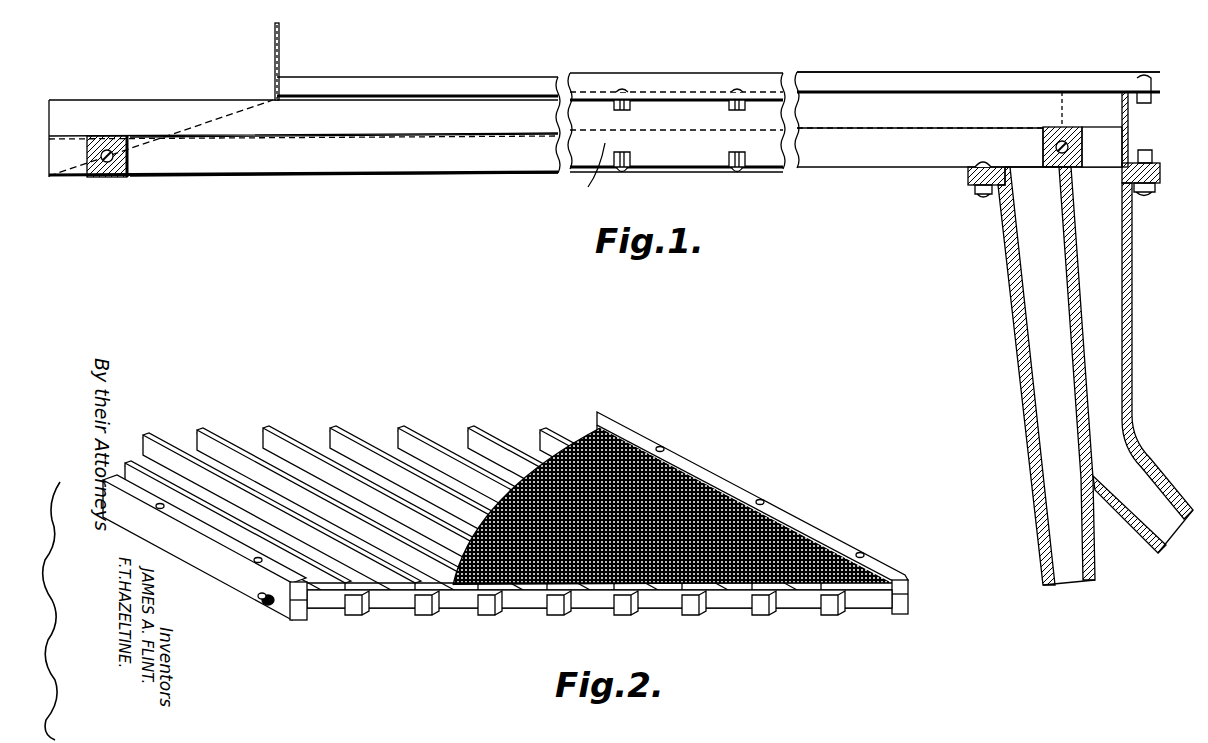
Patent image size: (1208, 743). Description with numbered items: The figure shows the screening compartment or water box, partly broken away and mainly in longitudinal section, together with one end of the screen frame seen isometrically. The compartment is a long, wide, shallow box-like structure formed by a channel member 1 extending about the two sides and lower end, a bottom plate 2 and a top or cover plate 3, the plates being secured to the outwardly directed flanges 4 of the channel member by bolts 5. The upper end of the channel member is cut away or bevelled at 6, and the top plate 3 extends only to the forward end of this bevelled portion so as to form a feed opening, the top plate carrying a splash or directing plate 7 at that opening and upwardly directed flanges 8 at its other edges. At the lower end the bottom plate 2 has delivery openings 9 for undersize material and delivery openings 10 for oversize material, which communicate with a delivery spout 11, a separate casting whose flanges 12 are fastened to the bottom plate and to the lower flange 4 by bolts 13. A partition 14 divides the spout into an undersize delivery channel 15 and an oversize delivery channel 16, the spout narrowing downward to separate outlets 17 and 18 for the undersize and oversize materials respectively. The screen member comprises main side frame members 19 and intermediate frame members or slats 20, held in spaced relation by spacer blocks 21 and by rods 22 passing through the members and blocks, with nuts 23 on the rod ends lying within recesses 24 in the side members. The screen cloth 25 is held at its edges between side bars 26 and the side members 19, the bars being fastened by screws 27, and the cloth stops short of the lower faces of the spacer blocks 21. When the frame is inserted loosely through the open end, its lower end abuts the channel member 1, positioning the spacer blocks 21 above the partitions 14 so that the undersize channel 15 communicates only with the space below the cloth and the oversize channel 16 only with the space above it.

In FIG. 1, the channel member 1 is at (1128, 126).
In FIG. 1, the bottom plate 2 is at (372, 176).
In FIG. 1, the top plate 3 is at (465, 95).
In FIG. 1, the flanges 4 is at (684, 100).
In FIG. 1, the bolts 5 is at (625, 107).
In FIG. 1, the bevelled portion 6 is at (231, 98).
In FIG. 1, the splash plate 7 is at (280, 50).
In FIG. 1, the upwardly directed flanges 8 is at (535, 80).
In FIG. 1, the undersize delivery openings 9 is at (1030, 165).
In FIG. 1, the oversize delivery openings 10 is at (1107, 166).
In FIG. 1, the delivery spout 11 is at (1089, 376).
In FIG. 1, the flanges 12 is at (968, 180).
In FIG. 1, the bolts 13 is at (990, 195).
In FIG. 1, the partition 14 is at (1076, 278).
In FIG. 1, the undersize delivery channel 15 is at (1030, 295).
In FIG. 1, the oversize delivery channel 16 is at (1105, 332).
In FIG. 1, the undersize outlet 17 is at (1043, 553).
In FIG. 1, the oversize outlet 18 is at (1172, 508).
In FIG. 2, the main side frame members 19 is at (206, 560).
In FIG. 1, the intermediate frame members 20 is at (170, 178).
In FIG. 2, the intermediate frame members 20 is at (408, 438).
In FIG. 1, the spacer blocks 21 is at (121, 179).
In FIG. 2, the spacer blocks 21 is at (398, 604).
In FIG. 1, the rods 22 is at (88, 180).
In FIG. 2, the rods 22 is at (268, 606).
In FIG. 2, the nuts 23 is at (292, 622).
In FIG. 2, the recesses 24 is at (260, 600).
In FIG. 1, the screen cloth 25 is at (415, 132).
In FIG. 2, the screen cloth 25 is at (690, 482).
In FIG. 1, the side bars 26 is at (363, 110).
In FIG. 2, the side bars 26 is at (140, 492).
In FIG. 2, the screws 27 is at (256, 566).